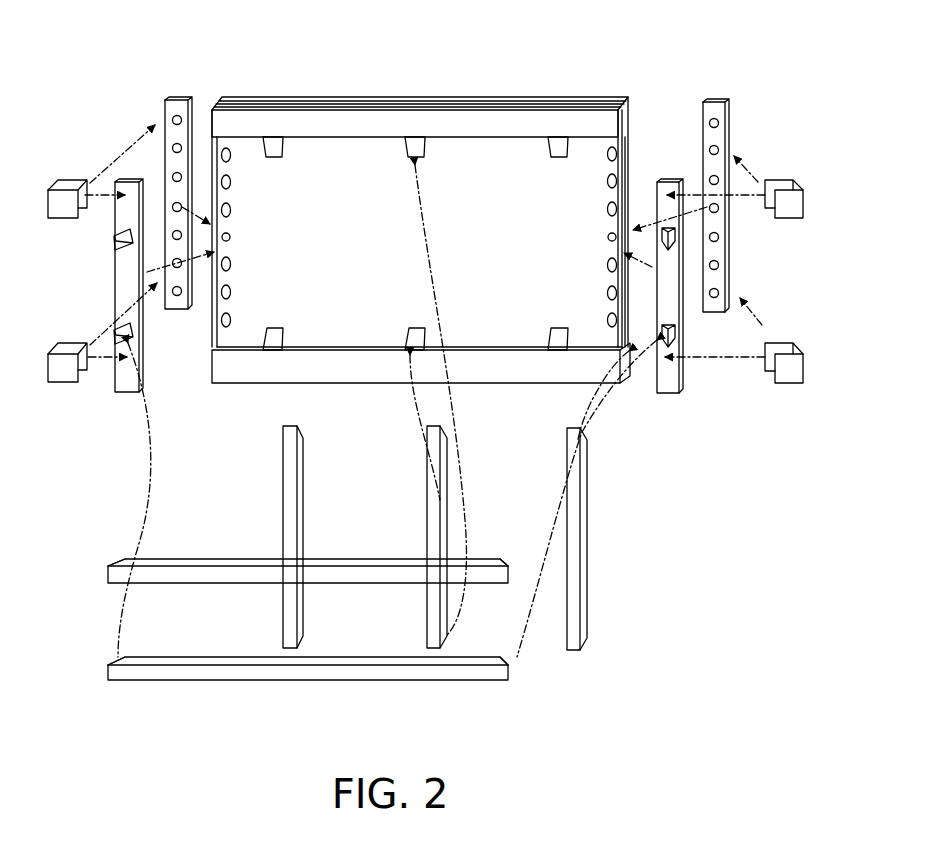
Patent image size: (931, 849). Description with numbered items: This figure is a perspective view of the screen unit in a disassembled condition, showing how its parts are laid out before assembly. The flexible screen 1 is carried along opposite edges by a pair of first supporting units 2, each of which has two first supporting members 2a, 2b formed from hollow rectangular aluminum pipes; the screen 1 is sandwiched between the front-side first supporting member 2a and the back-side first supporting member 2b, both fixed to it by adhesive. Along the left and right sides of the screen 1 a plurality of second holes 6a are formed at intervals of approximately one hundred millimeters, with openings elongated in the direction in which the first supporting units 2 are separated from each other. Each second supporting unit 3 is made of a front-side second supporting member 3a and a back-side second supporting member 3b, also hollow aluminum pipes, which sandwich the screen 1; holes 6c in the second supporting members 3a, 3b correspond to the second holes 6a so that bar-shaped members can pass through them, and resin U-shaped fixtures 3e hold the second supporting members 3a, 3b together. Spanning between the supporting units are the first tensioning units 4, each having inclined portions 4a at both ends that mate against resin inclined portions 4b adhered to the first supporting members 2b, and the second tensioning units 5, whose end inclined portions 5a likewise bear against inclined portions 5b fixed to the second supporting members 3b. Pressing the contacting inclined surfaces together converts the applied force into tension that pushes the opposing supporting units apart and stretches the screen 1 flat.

The screen 1 is at (335, 163).
The first supporting unit 2 is at (555, 42).
The first supporting member 2a is at (628, 115).
The first supporting member 2b is at (580, 118).
The second supporting unit 3 is at (192, 42).
The second supporting member 3a is at (172, 96).
The second supporting member 3b is at (130, 178).
The U-shaped fixture 3e is at (62, 215).
The first tensioning unit 4 is at (440, 640).
The inclined portion 4a is at (299, 433).
The inclined portion 4b is at (273, 150).
The second tensioning unit 5 is at (118, 575).
The inclined portion 5a is at (118, 563).
The inclined portion 5b is at (113, 335).
The second hole 6a is at (232, 183).
The hole 6c is at (173, 146).